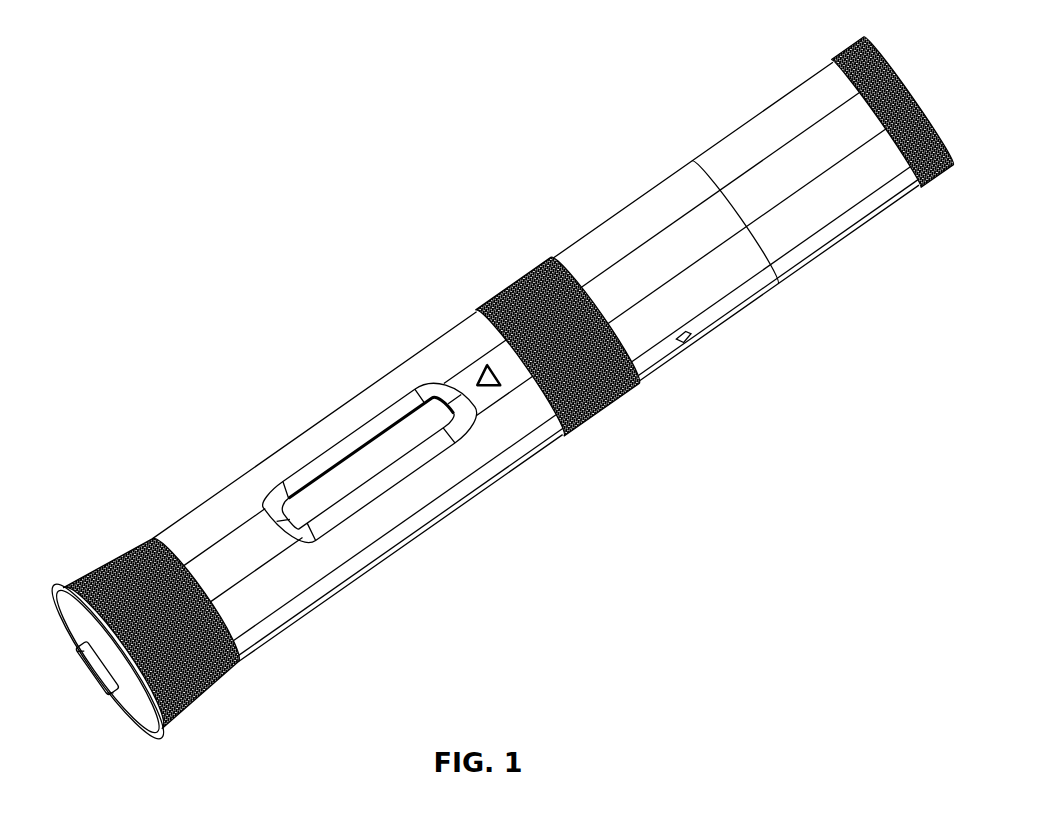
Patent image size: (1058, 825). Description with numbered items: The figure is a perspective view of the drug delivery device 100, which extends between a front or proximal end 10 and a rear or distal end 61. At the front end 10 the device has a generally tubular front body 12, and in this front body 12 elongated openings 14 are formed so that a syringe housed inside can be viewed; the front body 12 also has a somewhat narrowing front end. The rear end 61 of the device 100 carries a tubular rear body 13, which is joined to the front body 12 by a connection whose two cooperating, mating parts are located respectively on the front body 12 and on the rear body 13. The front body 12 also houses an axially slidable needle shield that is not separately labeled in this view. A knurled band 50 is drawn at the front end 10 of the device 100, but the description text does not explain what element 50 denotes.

The drug delivery device 100 is at (541, 513).
The front or proximal end 10 is at (77, 726).
The front body 12 is at (203, 520).
The rear body 13 is at (640, 206).
The elongated openings 14 is at (352, 428).
The knurled grip band 50 is at (200, 697).
The rear or distal end 61 is at (962, 61).